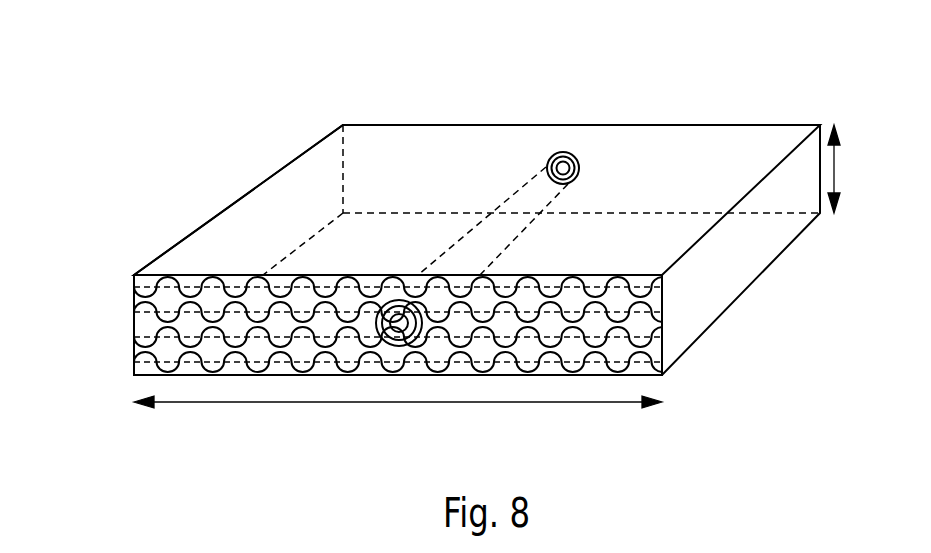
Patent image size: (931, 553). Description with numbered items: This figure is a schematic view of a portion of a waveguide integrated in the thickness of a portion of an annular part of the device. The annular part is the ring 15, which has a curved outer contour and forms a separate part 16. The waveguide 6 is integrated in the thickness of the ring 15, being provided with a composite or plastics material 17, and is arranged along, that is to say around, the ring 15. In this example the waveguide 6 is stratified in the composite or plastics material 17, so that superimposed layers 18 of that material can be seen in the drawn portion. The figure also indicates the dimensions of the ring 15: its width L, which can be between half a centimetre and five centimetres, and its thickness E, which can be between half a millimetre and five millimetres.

The ring 15 is at (760, 125).
The separate part 16 is at (286, 141).
The composite or plastics material 17 is at (170, 327).
The superimposed layers 18 is at (668, 302).
The waveguide 6 is at (563, 153).
The thickness E is at (835, 163).
The width L is at (404, 403).